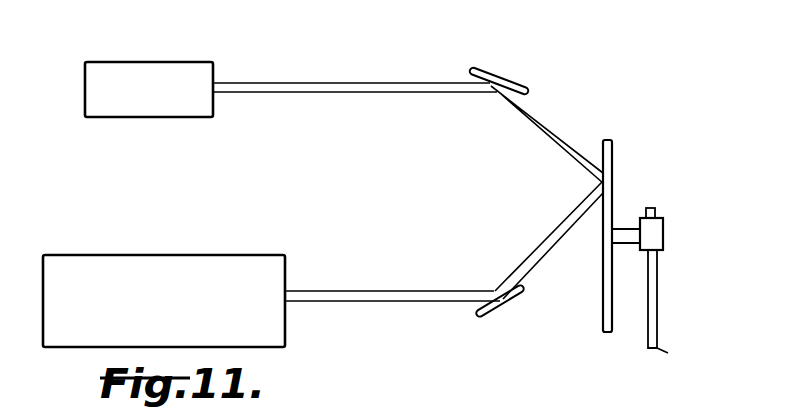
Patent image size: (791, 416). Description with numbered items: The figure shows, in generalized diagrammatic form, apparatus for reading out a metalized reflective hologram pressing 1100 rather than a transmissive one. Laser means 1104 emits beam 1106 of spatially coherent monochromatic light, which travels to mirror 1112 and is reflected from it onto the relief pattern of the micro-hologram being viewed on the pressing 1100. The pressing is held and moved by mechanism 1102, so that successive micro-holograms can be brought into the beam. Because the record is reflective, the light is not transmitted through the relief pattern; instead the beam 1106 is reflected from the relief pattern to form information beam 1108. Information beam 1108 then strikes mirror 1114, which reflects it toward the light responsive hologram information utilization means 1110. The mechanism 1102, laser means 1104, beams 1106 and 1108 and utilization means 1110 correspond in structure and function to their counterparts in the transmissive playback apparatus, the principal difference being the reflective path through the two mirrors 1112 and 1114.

The recording medium plate 1100 is at (603, 281).
The mechanism 1102 is at (670, 238).
The laser means 1104 is at (168, 50).
The beam 1106 is at (243, 81).
The information beam 1108 is at (530, 271).
The utilization means 1110 is at (185, 254).
The mirror 1112 is at (499, 78).
The mirror 1114 is at (493, 315).